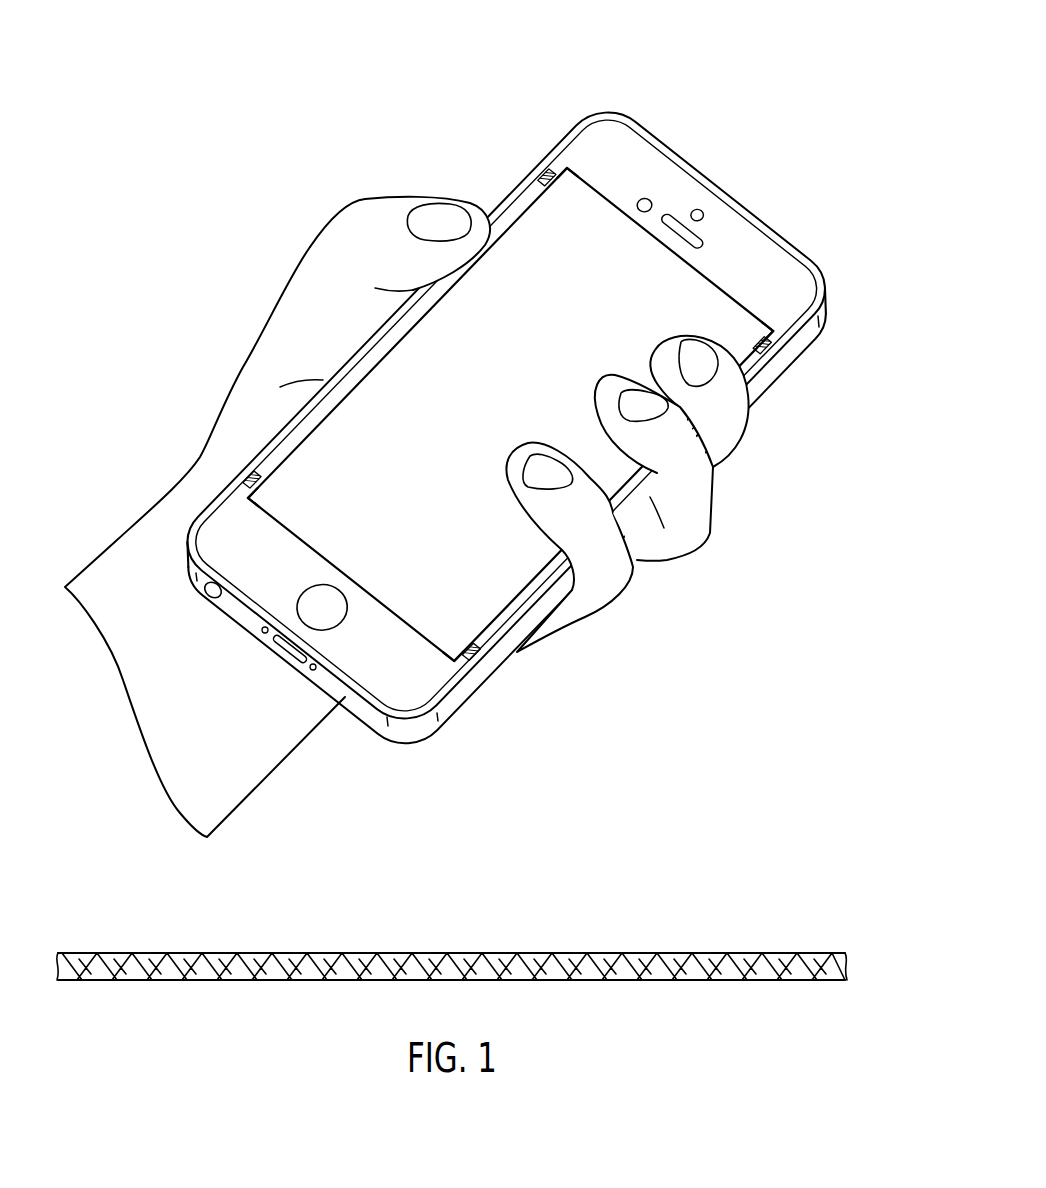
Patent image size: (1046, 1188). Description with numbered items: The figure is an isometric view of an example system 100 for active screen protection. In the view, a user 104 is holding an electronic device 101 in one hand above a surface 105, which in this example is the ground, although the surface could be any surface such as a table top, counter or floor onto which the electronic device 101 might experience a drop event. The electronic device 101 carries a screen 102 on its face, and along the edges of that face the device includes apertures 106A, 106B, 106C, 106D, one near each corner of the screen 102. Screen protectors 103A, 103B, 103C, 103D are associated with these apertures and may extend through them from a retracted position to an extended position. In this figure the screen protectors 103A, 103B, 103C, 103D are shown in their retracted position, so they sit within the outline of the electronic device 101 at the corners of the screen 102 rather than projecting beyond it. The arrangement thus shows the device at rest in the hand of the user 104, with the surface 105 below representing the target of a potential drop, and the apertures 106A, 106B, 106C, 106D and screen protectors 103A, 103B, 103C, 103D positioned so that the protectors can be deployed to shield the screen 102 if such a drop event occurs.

The system for active screen protection 100 is at (506, 396).
The electronic device 101 is at (422, 727).
The screen 102 is at (603, 227).
The screen protector 103A is at (566, 137).
The screen protector 103B is at (262, 453).
The screen protector 103C is at (474, 640).
The screen protector 103D is at (772, 330).
The user 104 is at (250, 765).
The surface 105 is at (749, 951).
The aperture 106A is at (542, 172).
The aperture 106B is at (250, 473).
The aperture 106C is at (468, 645).
The aperture 106D is at (757, 340).